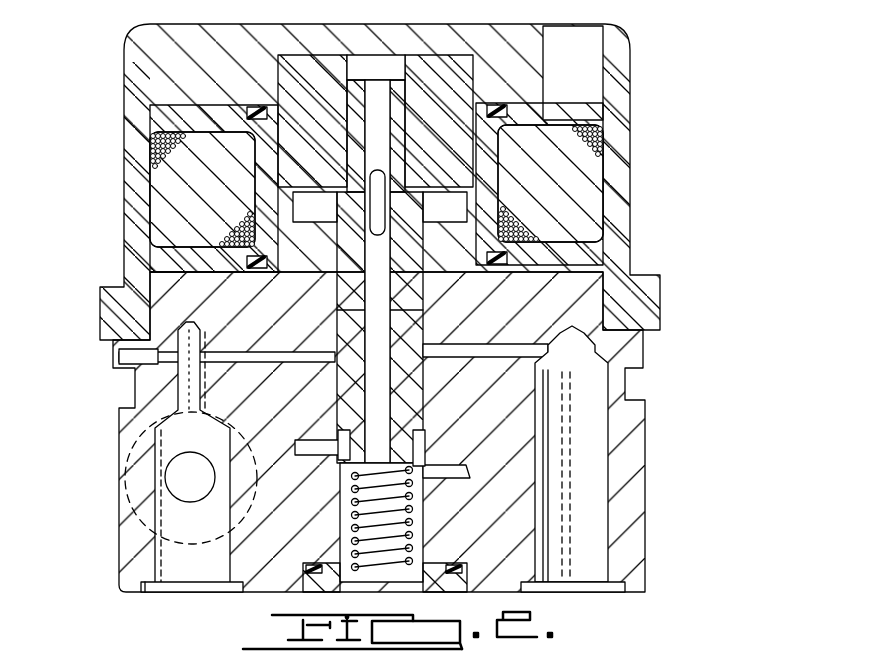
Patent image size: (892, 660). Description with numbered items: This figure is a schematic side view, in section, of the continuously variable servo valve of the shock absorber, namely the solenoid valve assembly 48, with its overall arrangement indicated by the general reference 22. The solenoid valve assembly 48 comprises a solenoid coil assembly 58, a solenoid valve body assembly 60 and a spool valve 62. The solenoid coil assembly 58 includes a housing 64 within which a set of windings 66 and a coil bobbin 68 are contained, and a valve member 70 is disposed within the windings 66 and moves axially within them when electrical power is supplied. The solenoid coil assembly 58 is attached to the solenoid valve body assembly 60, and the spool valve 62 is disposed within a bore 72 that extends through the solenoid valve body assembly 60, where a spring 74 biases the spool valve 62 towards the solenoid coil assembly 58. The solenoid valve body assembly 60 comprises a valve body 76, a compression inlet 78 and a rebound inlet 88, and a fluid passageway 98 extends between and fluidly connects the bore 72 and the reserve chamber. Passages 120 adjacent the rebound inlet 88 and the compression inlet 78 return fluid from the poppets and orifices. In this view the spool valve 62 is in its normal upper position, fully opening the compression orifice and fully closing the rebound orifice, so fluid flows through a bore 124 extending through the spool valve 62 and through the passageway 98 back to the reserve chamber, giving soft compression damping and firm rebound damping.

The solenoid valve assembly 22 is at (392, 326).
The solenoid valve assembly 48 is at (380, 182).
The solenoid coil assembly 58 is at (316, 259).
The solenoid valve body assembly 60 is at (324, 393).
The spool valve 62 is at (345, 271).
The housing 64 is at (135, 60).
The set of windings 66 is at (160, 212).
The coil bobbin 68 is at (160, 118).
The valve member 70 is at (340, 280).
The bore 72 is at (340, 556).
The spring 74 is at (392, 552).
The valve body 76 is at (636, 452).
The compression inlet 78 is at (182, 595).
The rebound inlet 88 is at (592, 588).
The fluid passageway 98 is at (384, 182).
The passage 120 is at (462, 466).
The bore 124 is at (372, 360).